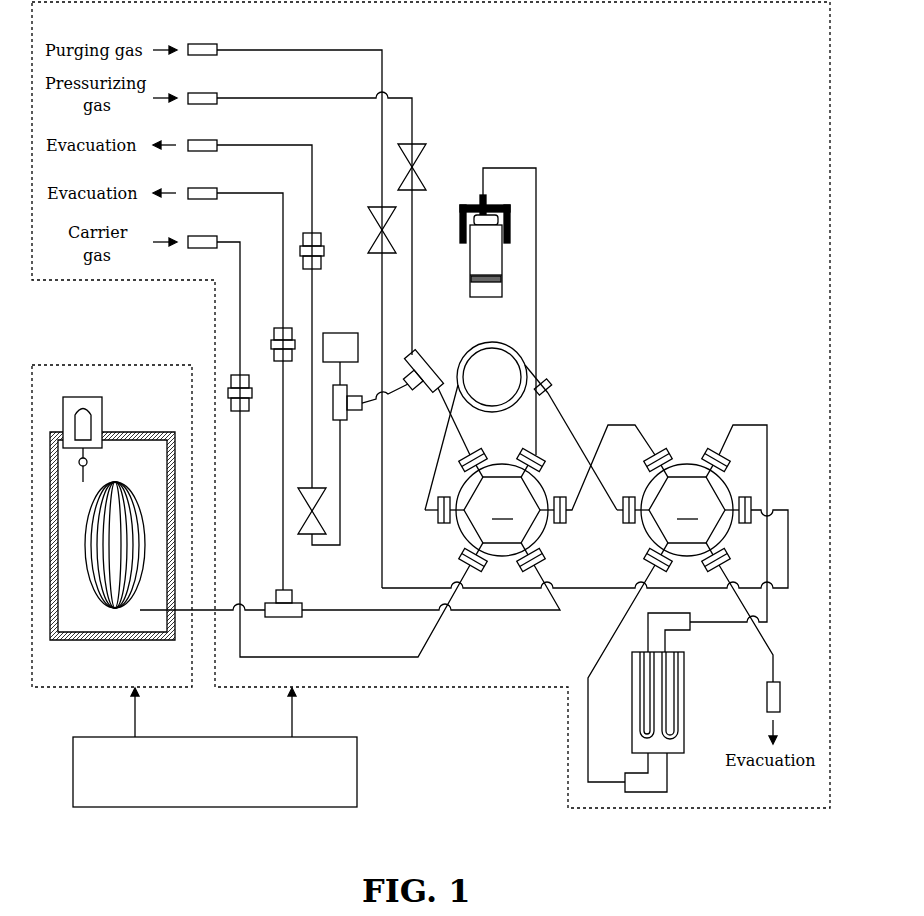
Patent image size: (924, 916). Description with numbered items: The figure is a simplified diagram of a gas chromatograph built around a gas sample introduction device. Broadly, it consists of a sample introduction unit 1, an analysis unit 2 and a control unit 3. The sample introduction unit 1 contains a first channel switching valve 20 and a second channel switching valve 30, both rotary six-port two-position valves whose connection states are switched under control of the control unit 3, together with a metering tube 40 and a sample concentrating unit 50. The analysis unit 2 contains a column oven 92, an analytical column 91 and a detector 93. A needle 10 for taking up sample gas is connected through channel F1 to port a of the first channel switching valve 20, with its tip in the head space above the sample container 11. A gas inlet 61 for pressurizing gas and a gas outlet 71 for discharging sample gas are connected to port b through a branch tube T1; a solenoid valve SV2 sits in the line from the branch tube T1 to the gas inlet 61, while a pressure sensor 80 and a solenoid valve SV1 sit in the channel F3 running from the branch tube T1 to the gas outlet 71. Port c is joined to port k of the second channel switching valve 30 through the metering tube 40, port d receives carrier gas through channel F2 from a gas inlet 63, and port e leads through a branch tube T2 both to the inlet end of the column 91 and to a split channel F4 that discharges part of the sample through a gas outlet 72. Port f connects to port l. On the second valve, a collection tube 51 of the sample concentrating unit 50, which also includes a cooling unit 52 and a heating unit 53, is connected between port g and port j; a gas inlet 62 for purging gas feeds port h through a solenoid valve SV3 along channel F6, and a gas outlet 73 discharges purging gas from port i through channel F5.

The sample introduction unit 1 is at (566, 740).
The analysis unit 2 is at (105, 366).
The control unit 3 is at (357, 780).
The needle 10 is at (486, 231).
The sample container 11 is at (468, 293).
The first channel switching valve 20 is at (502, 500).
The second channel switching valve 30 is at (686, 500).
The metering tube 40 is at (508, 348).
The sample concentrating unit 50 is at (673, 702).
The collection tube 51 is at (688, 661).
The cooling unit 52 is at (679, 729).
The heating unit 53 is at (640, 729).
The gas inlet 61 is at (212, 93).
The gas inlet 62 is at (212, 44).
The gas inlet 63 is at (212, 236).
The gas outlet 71 is at (212, 140).
The gas outlet 72 is at (212, 188).
The gas outlet 73 is at (782, 703).
The pressure sensor 80 is at (340, 347).
The analytical column 91 is at (140, 482).
The column oven 92 is at (90, 643).
The detector 93 is at (103, 412).
The solenoid valve SV1 is at (307, 538).
The solenoid valve SV2 is at (418, 144).
The solenoid valve SV3 is at (380, 207).
The branch tube T1 is at (425, 392).
The branch tube T2 is at (283, 620).
The channel F1 is at (540, 256).
The channel F2 is at (432, 641).
The channel F3 is at (315, 158).
The split channel F4 is at (281, 482).
The channel F5 is at (774, 651).
The channel F6 is at (781, 506).
The port a is at (528, 456).
The port b is at (477, 456).
The port c is at (451, 503).
The port d is at (469, 554).
The port e is at (536, 554).
The port f is at (553, 498).
The port g is at (713, 456).
The port h is at (738, 498).
The port i is at (719, 554).
The port j is at (656, 554).
The port k is at (635, 503).
The port l is at (662, 456).